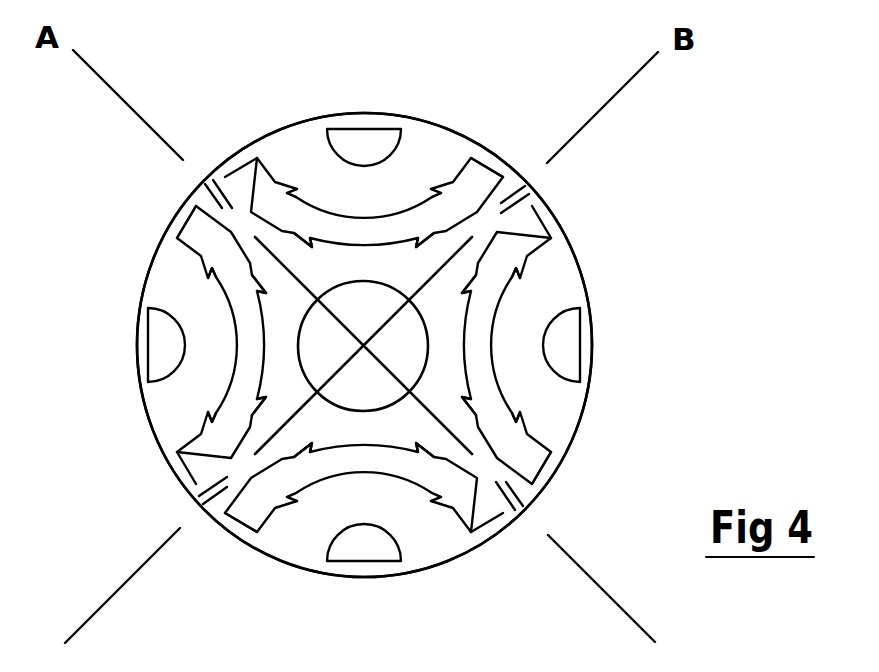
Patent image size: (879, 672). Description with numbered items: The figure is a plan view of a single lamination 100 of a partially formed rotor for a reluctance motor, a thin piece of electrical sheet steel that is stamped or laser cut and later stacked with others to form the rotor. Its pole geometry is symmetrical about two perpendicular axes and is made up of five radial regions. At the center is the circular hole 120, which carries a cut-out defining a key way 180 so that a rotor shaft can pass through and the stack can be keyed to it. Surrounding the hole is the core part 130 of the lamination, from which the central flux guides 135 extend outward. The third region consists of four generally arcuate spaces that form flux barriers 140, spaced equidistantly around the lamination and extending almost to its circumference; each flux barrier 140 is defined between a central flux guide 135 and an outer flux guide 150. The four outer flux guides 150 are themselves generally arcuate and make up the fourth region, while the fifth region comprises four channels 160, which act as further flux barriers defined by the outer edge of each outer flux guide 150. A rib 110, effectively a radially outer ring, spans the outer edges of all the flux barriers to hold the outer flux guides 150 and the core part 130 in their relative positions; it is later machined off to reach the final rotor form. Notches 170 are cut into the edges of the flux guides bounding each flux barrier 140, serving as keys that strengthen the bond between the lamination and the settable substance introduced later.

The lamination 100 is at (579, 196).
The rib 110 is at (583, 363).
The circular hole 120 is at (317, 338).
The core part 130 is at (442, 355).
The central flux guides 135 is at (205, 192).
The flux barriers 140 is at (247, 177).
The outer flux guides 150 is at (528, 372).
The channels 160 is at (362, 137).
The notches 170 is at (472, 284).
The key way 180 is at (422, 380).